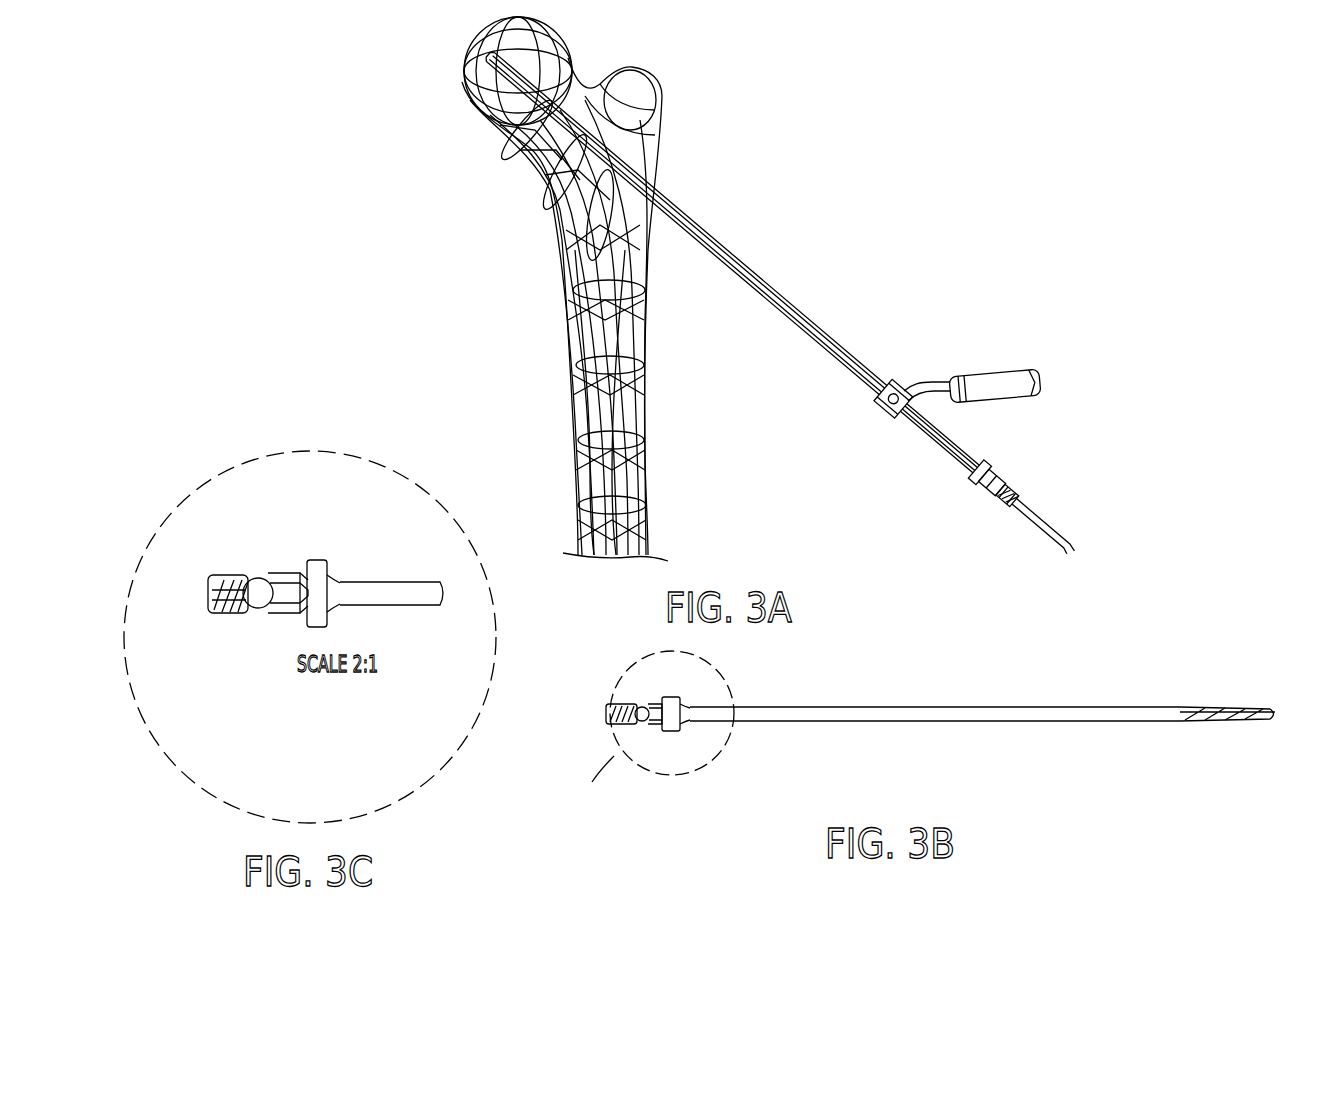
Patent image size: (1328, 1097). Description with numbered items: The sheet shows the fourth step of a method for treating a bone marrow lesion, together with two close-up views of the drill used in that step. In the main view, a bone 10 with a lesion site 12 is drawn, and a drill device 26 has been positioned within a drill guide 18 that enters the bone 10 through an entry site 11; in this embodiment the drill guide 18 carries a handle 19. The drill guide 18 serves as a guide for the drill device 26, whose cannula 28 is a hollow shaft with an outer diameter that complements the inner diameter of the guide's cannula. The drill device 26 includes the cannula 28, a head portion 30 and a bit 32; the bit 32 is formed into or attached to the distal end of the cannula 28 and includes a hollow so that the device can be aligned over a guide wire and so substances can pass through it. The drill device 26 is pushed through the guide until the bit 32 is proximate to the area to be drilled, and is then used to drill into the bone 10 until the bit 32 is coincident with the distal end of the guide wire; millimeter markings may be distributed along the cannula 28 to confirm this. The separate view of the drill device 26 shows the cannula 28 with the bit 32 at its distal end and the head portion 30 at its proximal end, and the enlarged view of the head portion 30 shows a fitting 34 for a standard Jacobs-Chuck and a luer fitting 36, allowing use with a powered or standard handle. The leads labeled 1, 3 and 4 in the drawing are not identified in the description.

In FIG. 3A, the tube / cannulated guide 1 is at (824, 324).
In FIG. 3A, the guide wire 3 is at (1040, 521).
In FIG. 3A, the cannula 4 is at (955, 439).
In FIG. 3A, the bone 10 is at (563, 285).
In FIG. 3A, the entry site 11 is at (660, 195).
In FIG. 3A, the lesion site 12 is at (476, 40).
In FIG. 3A, the drill guide 18 is at (786, 303).
In FIG. 3A, the handle 19 is at (1033, 372).
In FIG. 3A, the drill device 26 is at (945, 496).
In FIG. 3B, the drill device 26 is at (899, 726).
In FIG. 3B, the cannula 28 is at (912, 722).
In FIG. 3B, the head portion 30 is at (677, 762).
In FIG. 3C, the head portion 30 is at (319, 632).
In FIG. 3B, the bit 32 is at (1228, 720).
In FIG. 3C, the fitting 34 is at (290, 573).
In FIG. 3C, the luer fitting 36 is at (222, 614).